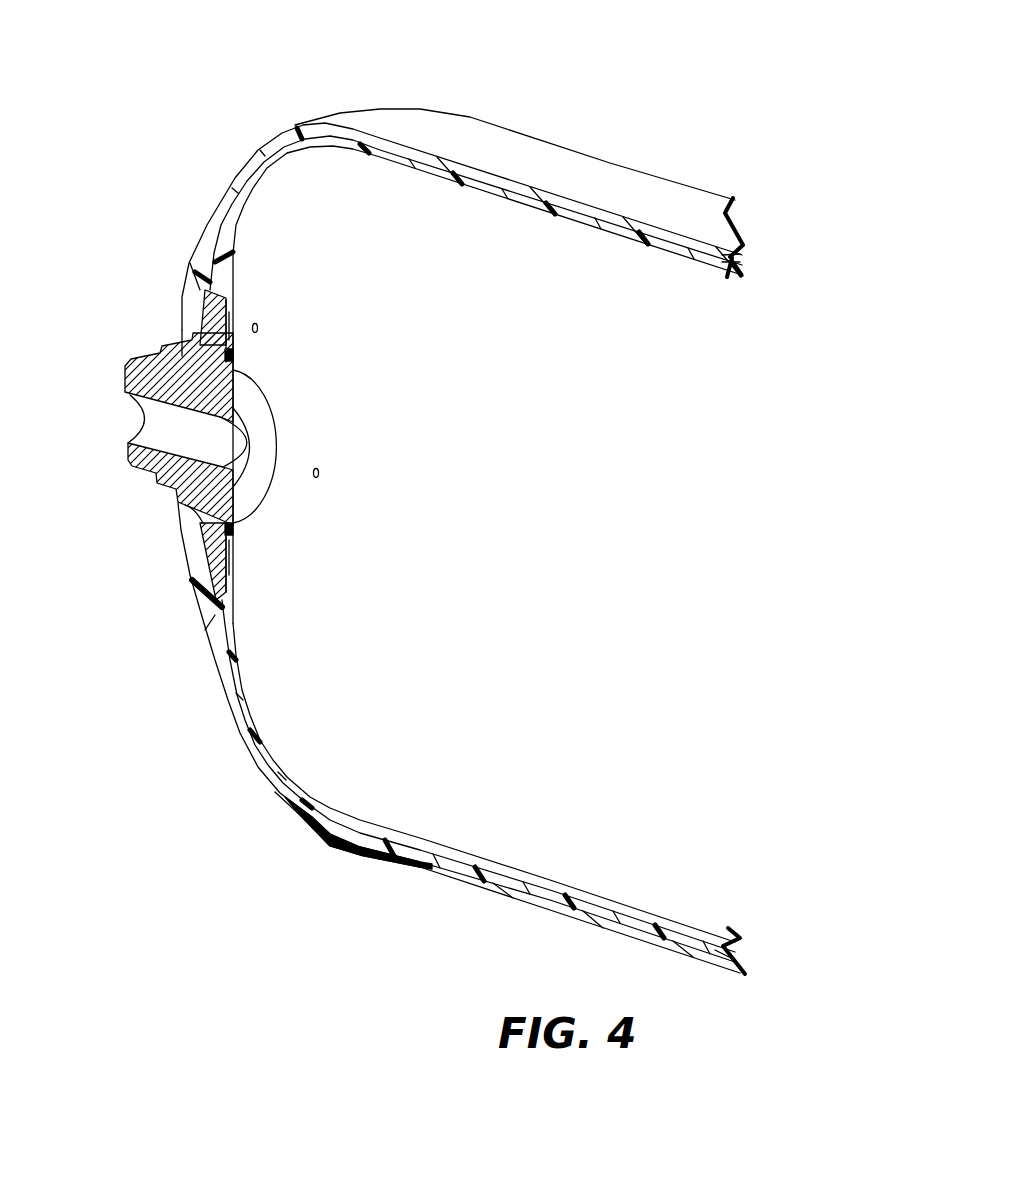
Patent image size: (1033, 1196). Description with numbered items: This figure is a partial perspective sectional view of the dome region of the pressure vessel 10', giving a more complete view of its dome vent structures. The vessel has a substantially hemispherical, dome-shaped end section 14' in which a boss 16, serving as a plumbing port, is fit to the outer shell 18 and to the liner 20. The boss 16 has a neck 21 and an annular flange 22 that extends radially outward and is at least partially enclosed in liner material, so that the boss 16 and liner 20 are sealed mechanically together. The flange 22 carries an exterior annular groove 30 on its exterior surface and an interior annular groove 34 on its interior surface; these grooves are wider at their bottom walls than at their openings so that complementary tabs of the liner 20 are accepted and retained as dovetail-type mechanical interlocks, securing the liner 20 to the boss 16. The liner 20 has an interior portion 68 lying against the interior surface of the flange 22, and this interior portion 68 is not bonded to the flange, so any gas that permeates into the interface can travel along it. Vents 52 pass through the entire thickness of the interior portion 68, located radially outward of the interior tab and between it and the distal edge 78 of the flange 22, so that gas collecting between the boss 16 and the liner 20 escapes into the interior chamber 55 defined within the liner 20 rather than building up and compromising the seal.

The pressure vessel 10' is at (434, 524).
The end section 14' is at (462, 178).
The boss 16 is at (122, 440).
The outer shell 18 is at (748, 258).
The liner 20 is at (740, 262).
The neck 21 is at (153, 462).
The annular flange 22 is at (203, 334).
The exterior annular groove 30 is at (215, 312).
The interior annular groove 34 is at (236, 352).
The vent 52 is at (260, 328).
The interior chamber 55 is at (463, 417).
The interior portion 68 is at (232, 322).
The distal edge 78 is at (198, 270).